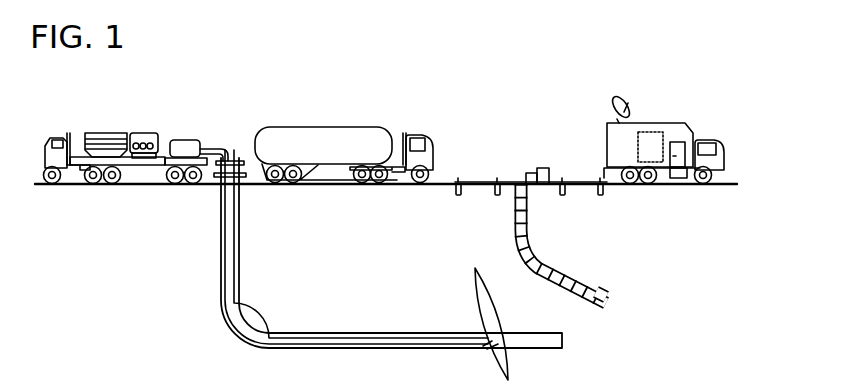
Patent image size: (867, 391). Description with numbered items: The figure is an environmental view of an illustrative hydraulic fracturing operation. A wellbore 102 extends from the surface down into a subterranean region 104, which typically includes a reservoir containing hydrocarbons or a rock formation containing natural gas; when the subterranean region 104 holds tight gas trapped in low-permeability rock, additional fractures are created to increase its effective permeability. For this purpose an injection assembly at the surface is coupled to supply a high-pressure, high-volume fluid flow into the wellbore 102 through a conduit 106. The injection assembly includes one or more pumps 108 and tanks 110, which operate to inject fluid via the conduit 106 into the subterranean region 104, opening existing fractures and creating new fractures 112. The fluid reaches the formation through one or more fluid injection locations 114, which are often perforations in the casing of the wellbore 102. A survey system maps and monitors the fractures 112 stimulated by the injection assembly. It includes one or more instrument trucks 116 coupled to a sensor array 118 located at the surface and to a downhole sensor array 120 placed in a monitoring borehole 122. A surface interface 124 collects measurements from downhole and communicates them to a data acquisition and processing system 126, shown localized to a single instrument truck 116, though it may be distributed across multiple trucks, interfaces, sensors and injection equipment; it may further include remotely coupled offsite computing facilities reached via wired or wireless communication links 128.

The wellbore 102 is at (221, 235).
The subterranean region 104 is at (383, 312).
The conduit 106 is at (228, 277).
The pump 108 is at (134, 134).
The tank 110 is at (279, 129).
The fracture 112 is at (483, 318).
The fluid injection location 114 is at (497, 343).
The instrument truck 116 is at (690, 126).
The sensor array 118 is at (493, 195).
The downhole sensor array 120 is at (597, 286).
The monitoring borehole 122 is at (537, 246).
The surface interface 124 is at (538, 168).
The data acquisition and processing system 126 is at (654, 132).
The communication link 128 is at (613, 108).